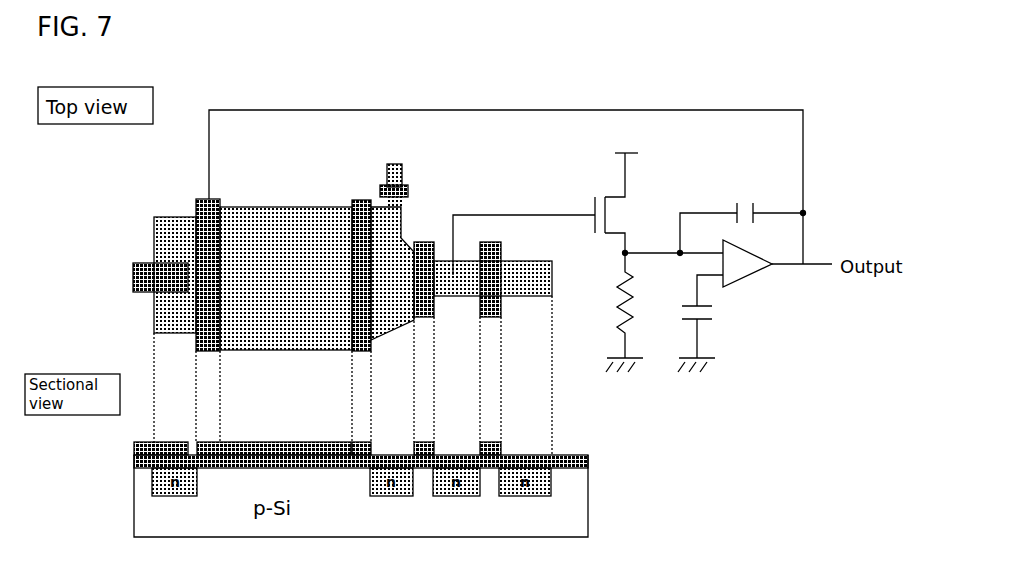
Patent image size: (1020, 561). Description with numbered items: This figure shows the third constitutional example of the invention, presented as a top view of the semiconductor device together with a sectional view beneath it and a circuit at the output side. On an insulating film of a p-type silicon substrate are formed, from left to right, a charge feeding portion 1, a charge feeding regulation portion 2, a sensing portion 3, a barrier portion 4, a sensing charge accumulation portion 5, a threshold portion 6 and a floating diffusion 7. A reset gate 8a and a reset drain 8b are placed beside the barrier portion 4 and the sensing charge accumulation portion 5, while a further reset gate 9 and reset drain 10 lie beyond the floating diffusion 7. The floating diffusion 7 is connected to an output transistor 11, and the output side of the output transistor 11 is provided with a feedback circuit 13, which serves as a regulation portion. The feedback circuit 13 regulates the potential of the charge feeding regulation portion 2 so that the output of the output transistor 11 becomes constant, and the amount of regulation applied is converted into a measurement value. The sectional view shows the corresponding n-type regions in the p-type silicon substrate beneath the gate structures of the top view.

The charge feeding portion 1 is at (133, 273).
The charge feeding regulation portion 2 is at (196, 207).
The sensing portion 3 is at (277, 207).
The barrier portion 4 is at (363, 198).
The sensing charge accumulation portion 5 is at (405, 241).
The threshold portion 6 is at (423, 242).
The floating diffusion 7 is at (460, 271).
The reset gate 8a is at (408, 188).
The reset drain 8b is at (396, 164).
The reset gate 9 is at (490, 242).
The reset drain 10 is at (522, 260).
The output transistor 11 is at (607, 218).
The feedback circuit 13 is at (745, 277).